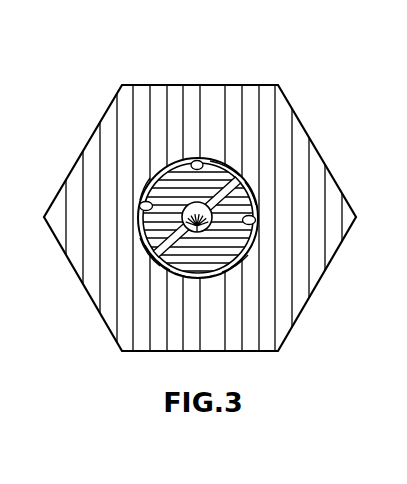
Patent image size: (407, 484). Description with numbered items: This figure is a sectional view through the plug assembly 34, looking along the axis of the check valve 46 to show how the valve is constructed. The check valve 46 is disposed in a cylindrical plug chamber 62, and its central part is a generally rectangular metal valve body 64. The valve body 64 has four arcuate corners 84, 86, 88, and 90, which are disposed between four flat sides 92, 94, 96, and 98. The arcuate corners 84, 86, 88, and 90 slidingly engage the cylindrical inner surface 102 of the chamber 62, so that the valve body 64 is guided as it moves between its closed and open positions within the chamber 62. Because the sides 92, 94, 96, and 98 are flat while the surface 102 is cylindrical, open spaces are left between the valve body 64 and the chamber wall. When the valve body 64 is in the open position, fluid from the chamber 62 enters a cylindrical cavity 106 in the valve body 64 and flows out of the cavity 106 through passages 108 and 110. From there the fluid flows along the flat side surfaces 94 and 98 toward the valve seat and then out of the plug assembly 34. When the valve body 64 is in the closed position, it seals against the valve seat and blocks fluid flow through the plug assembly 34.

The plug assembly 34 is at (345, 93).
The check valve 46 is at (257, 195).
The cylindrical plug chamber 62 is at (166, 168).
The valve body 64 is at (160, 178).
The arcuate corner 84 is at (256, 217).
The arcuate corner 86 is at (193, 276).
The arcuate corner 88 is at (140, 203).
The arcuate corner 90 is at (203, 160).
The flat side 92 is at (250, 262).
The flat side 94 is at (172, 268).
The flat side 96 is at (150, 190).
The flat side 98 is at (222, 168).
The cylindrical inner surface 102 is at (242, 255).
The cylindrical cavity 106 is at (204, 230).
The passage 108 is at (172, 245).
The passage 110 is at (262, 184).